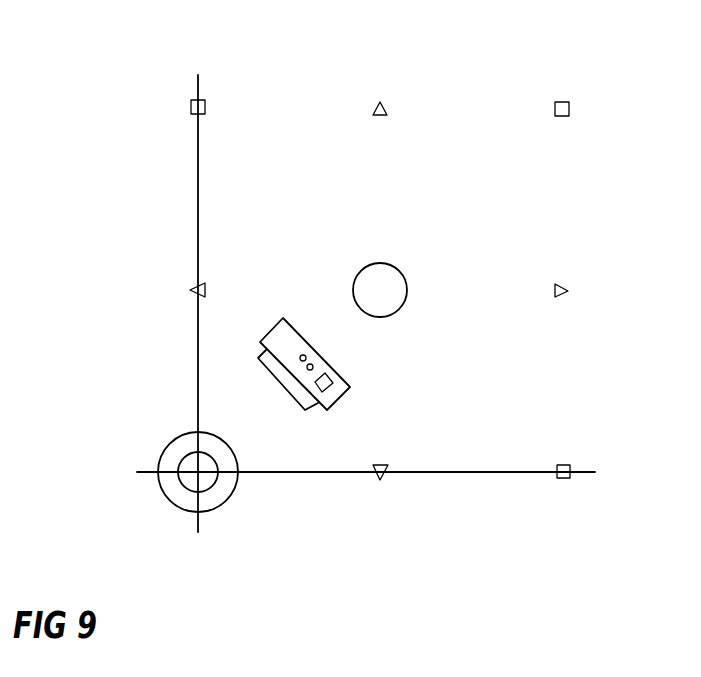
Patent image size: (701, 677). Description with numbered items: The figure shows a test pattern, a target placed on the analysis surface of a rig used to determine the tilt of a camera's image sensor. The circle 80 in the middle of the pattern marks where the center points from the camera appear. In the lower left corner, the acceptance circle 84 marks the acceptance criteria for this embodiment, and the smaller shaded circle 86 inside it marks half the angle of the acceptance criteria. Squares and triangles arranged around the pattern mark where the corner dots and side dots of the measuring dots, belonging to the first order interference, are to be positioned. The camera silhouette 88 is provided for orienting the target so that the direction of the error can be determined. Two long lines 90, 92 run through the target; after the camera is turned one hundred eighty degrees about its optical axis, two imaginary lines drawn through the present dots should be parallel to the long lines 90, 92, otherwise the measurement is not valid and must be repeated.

The circle 80 is at (393, 280).
The acceptance circle 84 is at (235, 492).
The smaller shaded circle 86 is at (187, 493).
The camera silhouette 88 is at (272, 337).
The long line 90 is at (478, 472).
The long line 92 is at (197, 168).